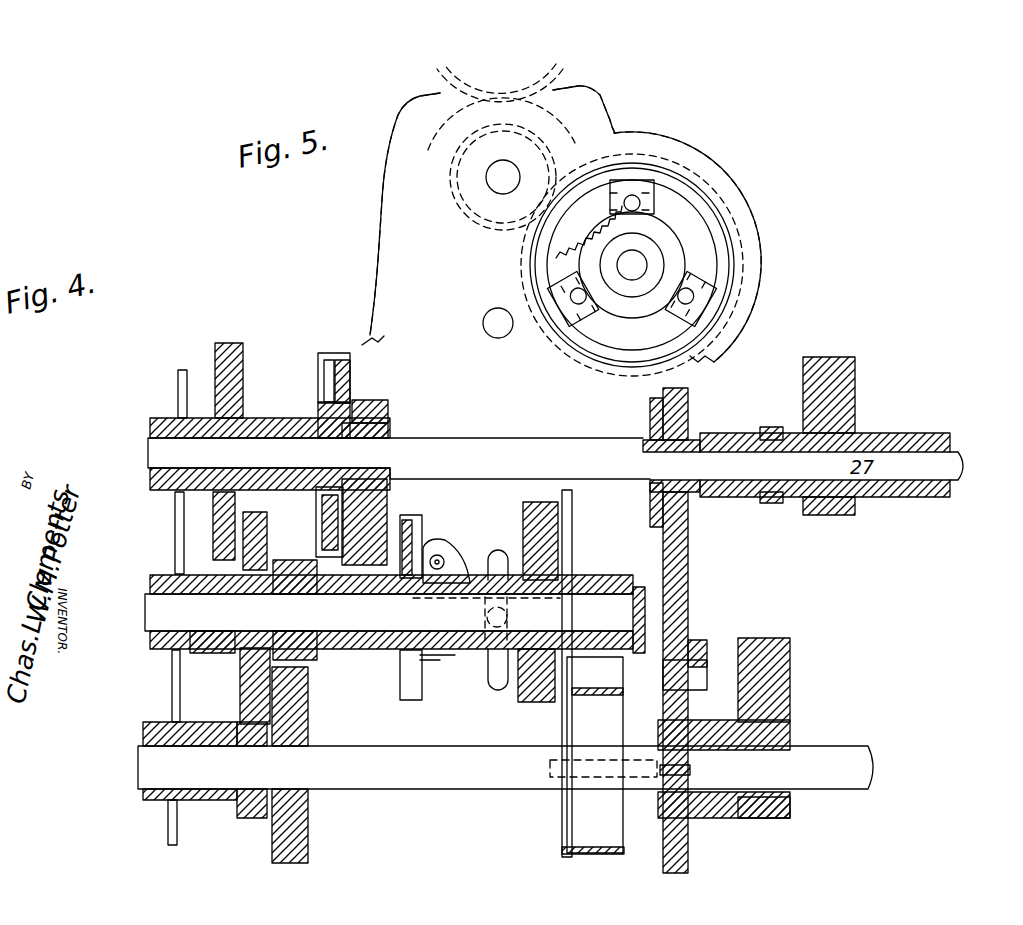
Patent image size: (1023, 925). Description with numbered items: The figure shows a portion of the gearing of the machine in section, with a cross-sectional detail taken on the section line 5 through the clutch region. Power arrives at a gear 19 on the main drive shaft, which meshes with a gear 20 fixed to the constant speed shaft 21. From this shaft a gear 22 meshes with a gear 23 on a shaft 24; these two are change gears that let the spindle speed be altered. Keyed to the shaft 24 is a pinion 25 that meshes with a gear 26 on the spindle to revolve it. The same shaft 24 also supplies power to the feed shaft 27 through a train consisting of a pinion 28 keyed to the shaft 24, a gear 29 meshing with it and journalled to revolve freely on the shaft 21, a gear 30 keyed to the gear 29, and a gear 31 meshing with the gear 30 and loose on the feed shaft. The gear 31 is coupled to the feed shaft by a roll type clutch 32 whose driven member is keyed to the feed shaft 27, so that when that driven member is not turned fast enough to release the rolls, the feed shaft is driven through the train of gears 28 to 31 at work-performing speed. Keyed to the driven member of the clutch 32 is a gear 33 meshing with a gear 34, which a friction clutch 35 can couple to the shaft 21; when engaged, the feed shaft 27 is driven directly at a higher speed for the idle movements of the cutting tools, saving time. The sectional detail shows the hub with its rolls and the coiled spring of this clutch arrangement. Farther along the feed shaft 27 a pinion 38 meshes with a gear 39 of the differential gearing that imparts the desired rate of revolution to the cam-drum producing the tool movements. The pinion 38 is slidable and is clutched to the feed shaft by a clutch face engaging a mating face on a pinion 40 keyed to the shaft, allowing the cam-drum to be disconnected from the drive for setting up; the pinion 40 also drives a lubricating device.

In FIG. 4, the section line 5 is at (336, 350).
In FIG. 5, the gear 19 is at (500, 83).
In FIG. 4, the gear 19 is at (522, 508).
In FIG. 5, the gear 20 is at (578, 120).
In FIG. 4, the gear 20 is at (518, 702).
In FIG. 5, the constant speed shaft 21 is at (503, 177).
In FIG. 4, the constant speed shaft 21 is at (395, 620).
In FIG. 5, the gear 22 is at (470, 215).
In FIG. 4, the gear 22 is at (297, 580).
In FIG. 5, the gear 23 is at (566, 350).
In FIG. 4, the gear 23 is at (308, 838).
In FIG. 5, the shaft 24 is at (498, 323).
In FIG. 4, the shaft 24 is at (505, 761).
In FIG. 4, the pinion 25 is at (790, 735).
In FIG. 4, the gear 26 is at (770, 645).
In FIG. 5, the feed shaft 27 is at (632, 265).
In FIG. 4, the feed shaft 27 is at (555, 454).
In FIG. 4, the pinion 28 is at (240, 818).
In FIG. 4, the gear 29 is at (240, 690).
In FIG. 4, the gear 30 is at (215, 652).
In FIG. 4, the gear 31 is at (228, 342).
In FIG. 4, the roll clutch 32 is at (349, 390).
In FIG. 5, the gear 33 is at (596, 205).
In FIG. 4, the gear 33 is at (388, 412).
In FIG. 5, the gear 34 is at (566, 250).
In FIG. 4, the gear 34 is at (378, 520).
In FIG. 4, the friction clutch 35 is at (432, 545).
In FIG. 4, the pinion 38 is at (796, 454).
In FIG. 4, the gear 39 is at (855, 365).
In FIG. 4, the pinion 40 is at (770, 500).